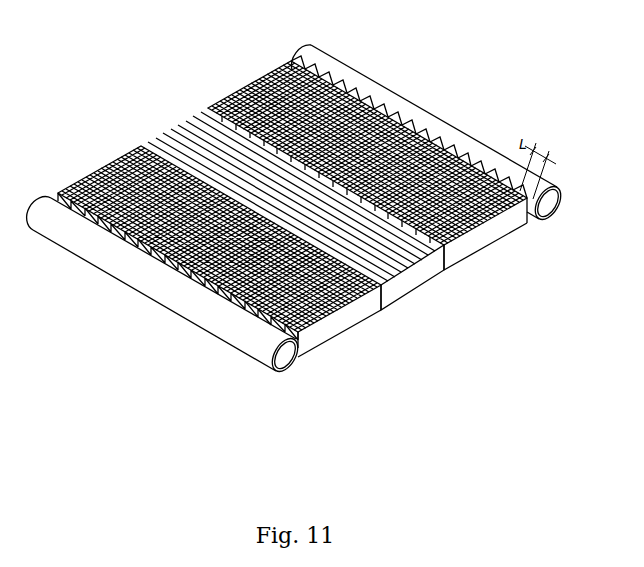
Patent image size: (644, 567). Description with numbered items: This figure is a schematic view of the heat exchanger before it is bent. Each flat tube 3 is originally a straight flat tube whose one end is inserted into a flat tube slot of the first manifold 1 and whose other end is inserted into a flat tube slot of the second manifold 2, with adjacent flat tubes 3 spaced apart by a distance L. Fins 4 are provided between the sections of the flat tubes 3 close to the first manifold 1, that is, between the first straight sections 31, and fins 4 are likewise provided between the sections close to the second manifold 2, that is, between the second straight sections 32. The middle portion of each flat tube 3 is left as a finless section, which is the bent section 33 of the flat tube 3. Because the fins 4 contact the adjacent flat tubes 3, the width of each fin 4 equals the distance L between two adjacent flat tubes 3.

The first manifold 1 is at (284, 359).
The second manifold 2 is at (551, 207).
The flat tube 3 is at (193, 129).
The fins 4 is at (111, 152).
The first straight section 31 is at (327, 306).
The second straight section 32 is at (466, 227).
The bent section 33 is at (406, 271).